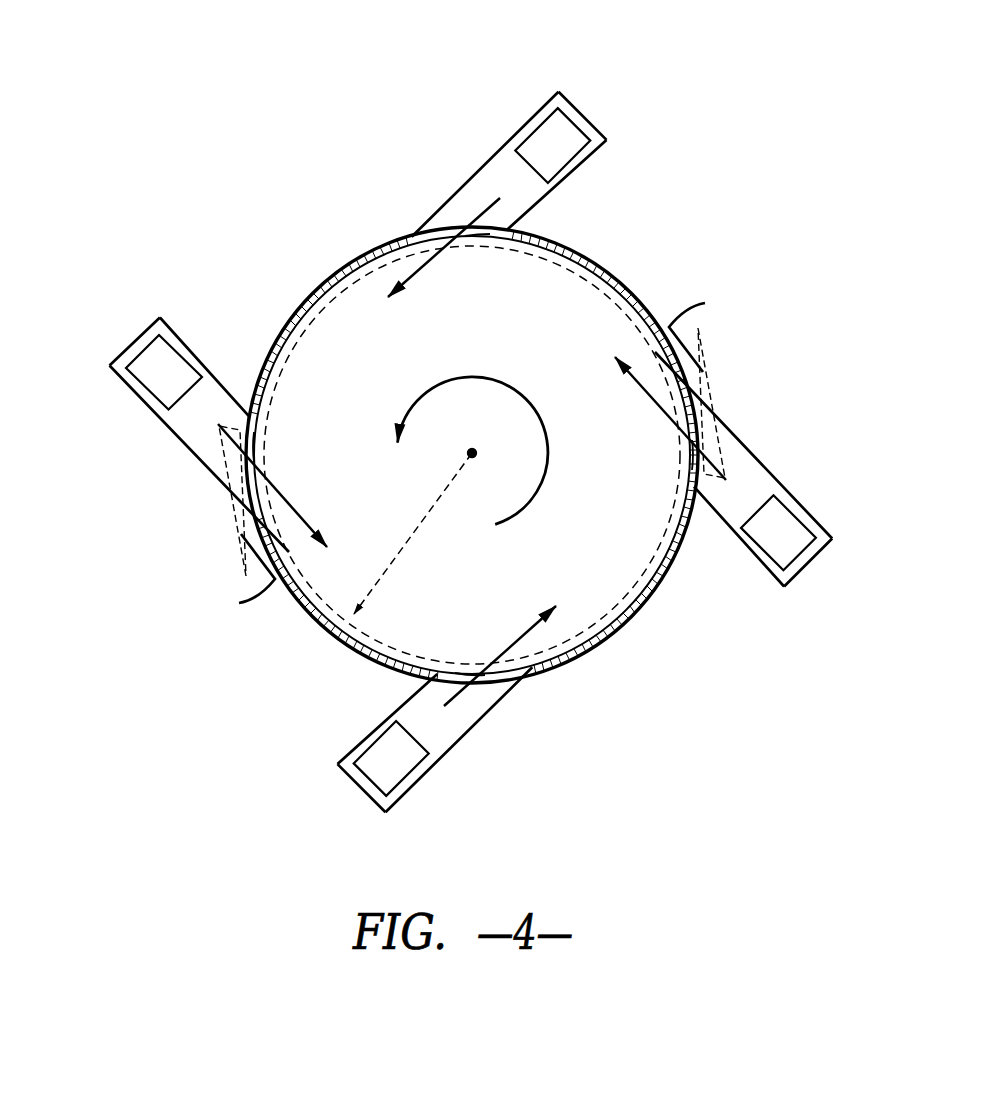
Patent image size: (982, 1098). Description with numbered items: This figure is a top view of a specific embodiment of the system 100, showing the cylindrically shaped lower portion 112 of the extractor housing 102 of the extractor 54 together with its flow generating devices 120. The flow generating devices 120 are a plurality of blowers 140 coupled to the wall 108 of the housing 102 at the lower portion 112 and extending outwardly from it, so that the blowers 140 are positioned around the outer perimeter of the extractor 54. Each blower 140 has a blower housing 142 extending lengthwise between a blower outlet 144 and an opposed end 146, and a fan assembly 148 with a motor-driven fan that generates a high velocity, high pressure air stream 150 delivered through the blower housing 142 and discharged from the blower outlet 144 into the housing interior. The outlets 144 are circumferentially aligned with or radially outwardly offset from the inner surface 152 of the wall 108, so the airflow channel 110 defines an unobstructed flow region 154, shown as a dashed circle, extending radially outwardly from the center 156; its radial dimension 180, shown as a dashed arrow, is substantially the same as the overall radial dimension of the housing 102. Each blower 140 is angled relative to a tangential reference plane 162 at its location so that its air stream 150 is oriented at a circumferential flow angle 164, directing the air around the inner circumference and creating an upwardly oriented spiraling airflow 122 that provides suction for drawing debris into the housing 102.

The system 100 is at (333, 86).
The extractor 54 is at (526, 423).
The extractor housing 102 is at (760, 249).
The wall 108 is at (319, 262).
The airflow channel 110 is at (451, 431).
The lower portion 112 is at (372, 228).
The flow generating device 120 is at (470, 432).
The blower 140 is at (470, 432).
The blower housing 142 is at (585, 178).
The blower outlet 144 is at (478, 236).
The opposed end 146 is at (589, 119).
The fan assembly 148 is at (548, 128).
The air stream 150 is at (433, 262).
The inner surface 152 is at (617, 282).
The unobstructed flow region 154 is at (640, 599).
The center 156 is at (478, 456).
The tangential reference plane 162 is at (705, 339).
The circumferential flow angle 164 is at (681, 331).
The radial dimension 180 is at (430, 512).
The spiraling airflow 122 is at (474, 378).